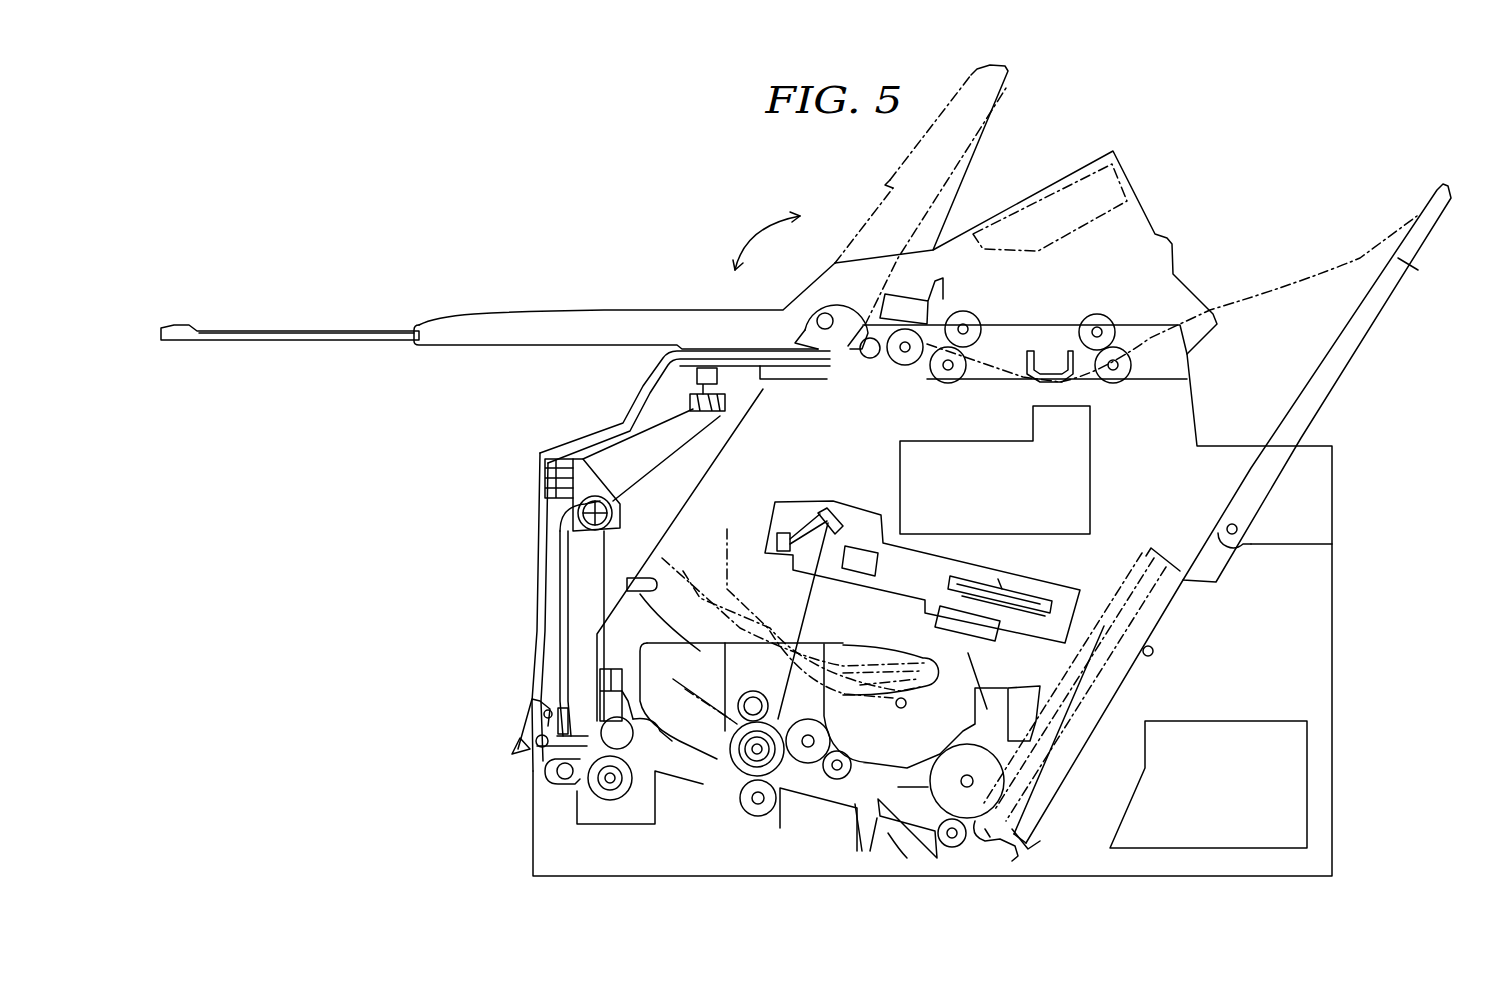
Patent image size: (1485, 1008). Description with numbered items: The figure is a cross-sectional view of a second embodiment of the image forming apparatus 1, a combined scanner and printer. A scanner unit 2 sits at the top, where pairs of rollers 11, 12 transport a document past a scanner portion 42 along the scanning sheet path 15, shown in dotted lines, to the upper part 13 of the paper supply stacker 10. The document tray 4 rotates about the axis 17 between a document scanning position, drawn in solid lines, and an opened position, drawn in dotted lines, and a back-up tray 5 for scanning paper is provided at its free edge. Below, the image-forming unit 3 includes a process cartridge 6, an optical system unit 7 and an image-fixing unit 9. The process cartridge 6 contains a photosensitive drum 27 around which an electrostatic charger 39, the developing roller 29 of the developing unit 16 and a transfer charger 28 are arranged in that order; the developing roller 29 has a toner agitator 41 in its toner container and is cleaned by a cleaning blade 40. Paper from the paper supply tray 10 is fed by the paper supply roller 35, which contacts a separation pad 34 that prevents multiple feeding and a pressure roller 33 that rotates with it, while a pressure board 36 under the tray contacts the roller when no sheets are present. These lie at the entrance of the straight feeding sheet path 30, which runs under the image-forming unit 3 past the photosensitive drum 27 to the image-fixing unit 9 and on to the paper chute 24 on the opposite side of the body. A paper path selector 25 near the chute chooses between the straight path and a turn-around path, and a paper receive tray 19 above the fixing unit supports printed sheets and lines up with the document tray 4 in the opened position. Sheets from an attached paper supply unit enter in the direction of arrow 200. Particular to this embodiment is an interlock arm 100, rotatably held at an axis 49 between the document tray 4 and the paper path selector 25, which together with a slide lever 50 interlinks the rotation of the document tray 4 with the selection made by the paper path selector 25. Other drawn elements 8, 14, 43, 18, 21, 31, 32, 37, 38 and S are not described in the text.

The image-forming apparatus 1 is at (1333, 680).
The scanner unit 2 is at (1102, 478).
The image-forming unit 3 is at (922, 556).
The document tray 4 is at (453, 320).
The back-up tray 5 is at (261, 322).
The process cartridge 6 is at (693, 627).
The optical system unit 7 is at (834, 470).
The guide member 8 is at (697, 755).
The image-fixing unit 9 is at (608, 797).
The paper supply tray 10 is at (1078, 763).
The rollers 11 is at (970, 322).
The rollers 12 is at (1100, 318).
The upper part of paper supply tray 13 is at (1375, 313).
The original cover 14 is at (1026, 209).
The original pressing plate 43 is at (1118, 180).
The scanning sheet path 15 is at (1312, 287).
The developing unit 16 is at (967, 667).
The axis 17 is at (822, 314).
The frame 18 is at (680, 362).
The paper receive tray 19 is at (693, 480).
The side cover 21 is at (533, 567).
The paper chute 24 is at (535, 763).
The paper path selector 25 is at (535, 758).
The photosensitive drum 27 is at (735, 773).
The transfer charger 28 is at (753, 813).
The developing roller 29 is at (807, 757).
The feeding sheet path 30 is at (850, 850).
The supply roller 31 is at (840, 778).
The guide member 32 is at (870, 852).
The pressure roller 33 is at (955, 845).
The separation pad 34 is at (983, 842).
The paper supply roller 35 is at (953, 763).
The pressure board 36 is at (1040, 813).
The charging unit 37 is at (687, 690).
The sheet path 38 is at (740, 573).
The electrostatic charger 39 is at (768, 703).
The cleaning blade 40 is at (818, 693).
The toner agitator 41 is at (880, 697).
The scanner portion 42 is at (1030, 397).
The axis 49 is at (577, 500).
The slide lever 50 is at (693, 380).
The interlock arm 100 is at (557, 587).
The arrow 200 is at (900, 847).
The sheet S is at (1155, 555).